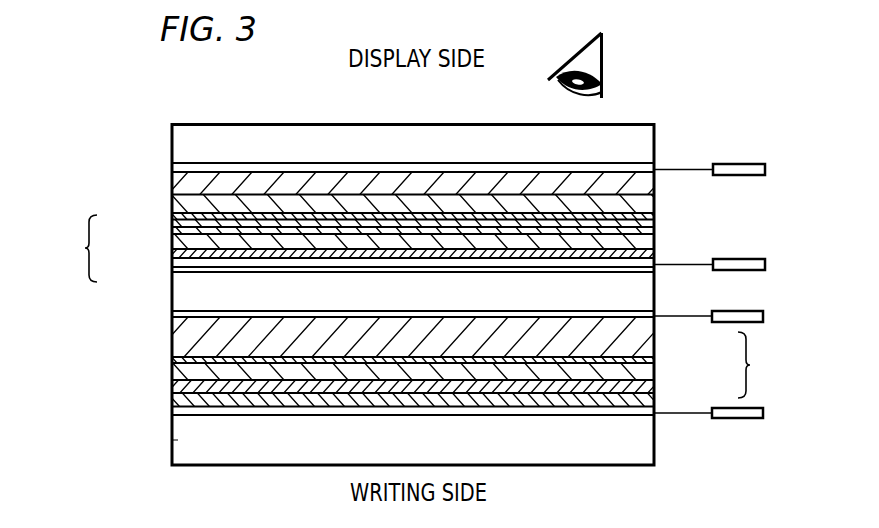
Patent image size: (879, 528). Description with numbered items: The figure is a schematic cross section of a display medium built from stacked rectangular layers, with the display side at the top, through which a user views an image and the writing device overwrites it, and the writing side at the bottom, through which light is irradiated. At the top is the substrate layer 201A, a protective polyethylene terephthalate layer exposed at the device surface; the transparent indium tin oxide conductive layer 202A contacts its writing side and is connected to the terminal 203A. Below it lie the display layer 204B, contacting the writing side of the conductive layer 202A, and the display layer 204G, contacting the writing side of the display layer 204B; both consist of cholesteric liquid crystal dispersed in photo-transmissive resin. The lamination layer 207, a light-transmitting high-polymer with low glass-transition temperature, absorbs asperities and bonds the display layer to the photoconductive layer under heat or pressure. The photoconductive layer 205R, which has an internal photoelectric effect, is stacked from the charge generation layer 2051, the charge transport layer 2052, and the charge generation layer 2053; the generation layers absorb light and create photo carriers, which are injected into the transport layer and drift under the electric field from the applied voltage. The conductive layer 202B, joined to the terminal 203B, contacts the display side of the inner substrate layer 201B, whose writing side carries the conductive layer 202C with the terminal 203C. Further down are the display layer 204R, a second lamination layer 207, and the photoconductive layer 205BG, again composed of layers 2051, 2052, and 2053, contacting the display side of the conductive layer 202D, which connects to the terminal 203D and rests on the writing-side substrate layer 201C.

The substrate layer 201A is at (172, 142).
The conductive layer 202A is at (172, 166).
The display layer 204B is at (654, 182).
The display layer 204G is at (654, 204).
The lamination layer 207 is at (172, 212).
The charge generation layer 2051 is at (172, 223).
The charge transport layer 2052 is at (172, 232).
The charge generation layer 2053 is at (172, 244).
The photoconductive layer 205R is at (64, 248).
The photoconductive layer 205BG is at (781, 365).
The conductive layer 202B is at (172, 276).
The substrate layer 201B is at (172, 306).
The conductive layer 202C is at (172, 320).
The display layer 204R is at (172, 343).
The conductive layer 202D is at (172, 412).
The substrate layer 201C is at (172, 446).
The terminal 203A is at (765, 164).
The terminal 203B is at (765, 259).
The terminal 203C is at (786, 296).
The terminal 203D is at (763, 418).